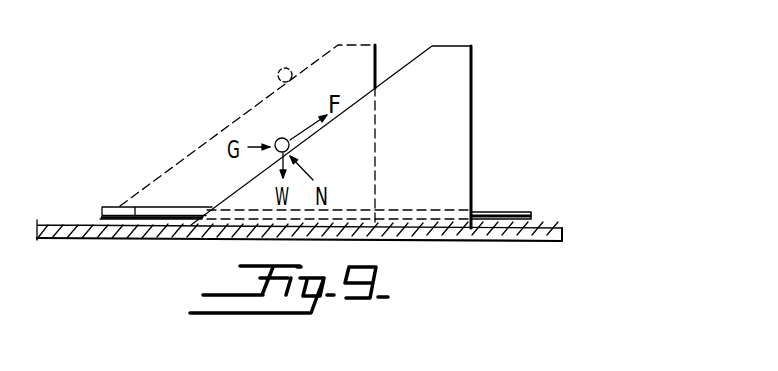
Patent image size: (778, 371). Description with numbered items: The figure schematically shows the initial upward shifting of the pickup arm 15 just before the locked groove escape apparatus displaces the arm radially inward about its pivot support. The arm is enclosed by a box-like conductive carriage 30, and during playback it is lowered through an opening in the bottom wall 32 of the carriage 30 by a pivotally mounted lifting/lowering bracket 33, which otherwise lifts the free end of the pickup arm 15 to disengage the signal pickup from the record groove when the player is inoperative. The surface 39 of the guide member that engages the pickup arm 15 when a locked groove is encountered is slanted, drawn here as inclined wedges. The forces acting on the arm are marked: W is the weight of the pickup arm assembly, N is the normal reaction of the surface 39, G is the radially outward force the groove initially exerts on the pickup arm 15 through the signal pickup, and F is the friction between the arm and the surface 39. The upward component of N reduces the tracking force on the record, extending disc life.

The pickup arm 15 is at (278, 77).
The carriage 30 is at (58, 222).
The bottom wall 32 is at (533, 242).
The lifting/lowering bracket 33 is at (500, 210).
The surface 39 is at (318, 61).